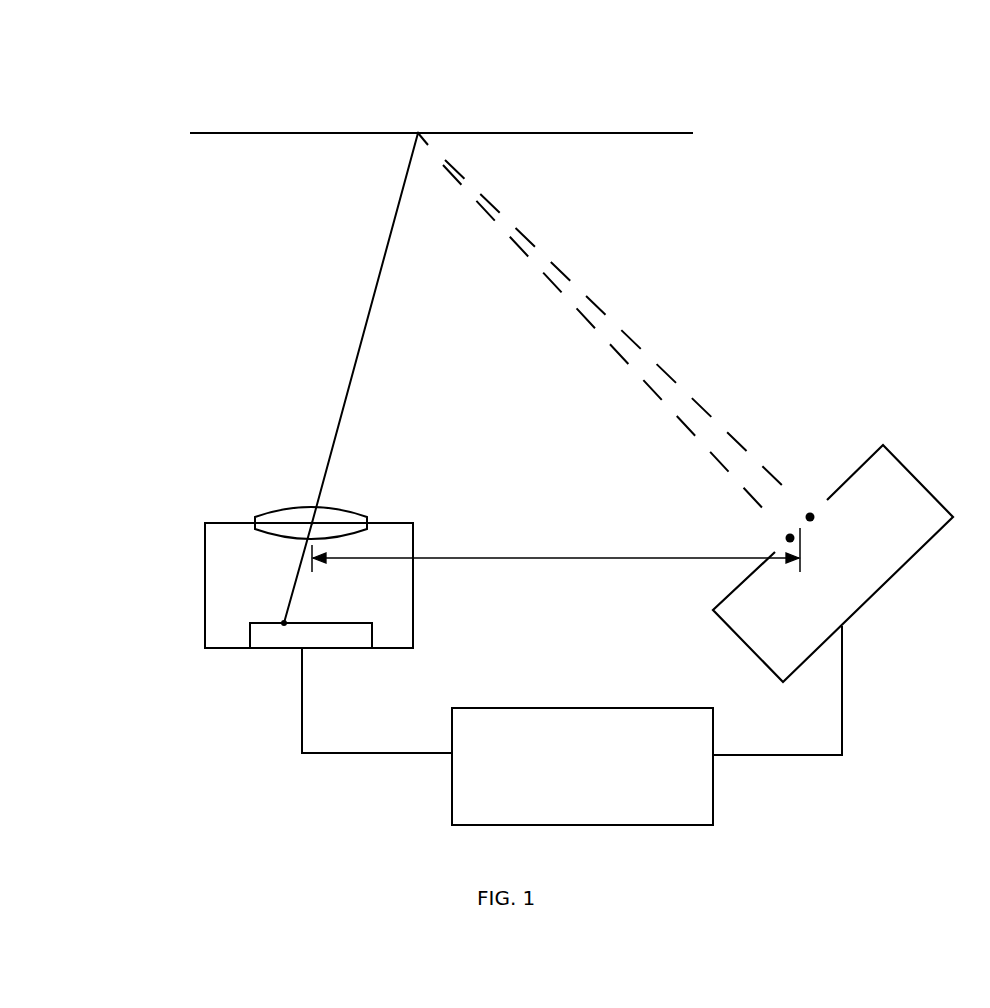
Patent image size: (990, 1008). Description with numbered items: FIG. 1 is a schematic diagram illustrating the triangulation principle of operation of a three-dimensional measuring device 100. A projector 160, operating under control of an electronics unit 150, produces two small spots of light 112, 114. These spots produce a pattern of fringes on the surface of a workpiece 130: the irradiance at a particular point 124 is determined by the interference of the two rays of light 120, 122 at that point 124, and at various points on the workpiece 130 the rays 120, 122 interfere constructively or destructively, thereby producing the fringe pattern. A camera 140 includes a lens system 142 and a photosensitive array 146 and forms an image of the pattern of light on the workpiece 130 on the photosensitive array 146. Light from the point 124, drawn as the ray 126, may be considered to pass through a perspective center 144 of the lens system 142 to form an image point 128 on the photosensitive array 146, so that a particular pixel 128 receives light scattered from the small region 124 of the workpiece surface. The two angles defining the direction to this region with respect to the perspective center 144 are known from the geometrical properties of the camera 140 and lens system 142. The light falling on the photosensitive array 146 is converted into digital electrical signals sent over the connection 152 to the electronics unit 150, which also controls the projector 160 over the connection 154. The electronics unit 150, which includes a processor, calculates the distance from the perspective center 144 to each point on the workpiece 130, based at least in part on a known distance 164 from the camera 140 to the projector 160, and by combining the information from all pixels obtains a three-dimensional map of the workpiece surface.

The optical measurement system 100 is at (150, 83).
The spot of light 112 is at (808, 514).
The spot of light 114 is at (787, 536).
The ray of light 120 is at (657, 367).
The ray of light 122 is at (647, 383).
The point 124 is at (419, 132).
The incident light beam 126 is at (367, 317).
The image point 128 is at (287, 621).
The workpiece 130 is at (607, 132).
The camera 140 is at (252, 412).
The lens system 142 is at (257, 518).
The perspective center 144 is at (311, 520).
The photosensitive array 146 is at (250, 622).
The electronics unit 150 is at (515, 708).
The connection to light source 152 is at (320, 753).
The connection to detector 154 is at (843, 688).
The projector 160 is at (862, 397).
The known distance 164 is at (513, 557).